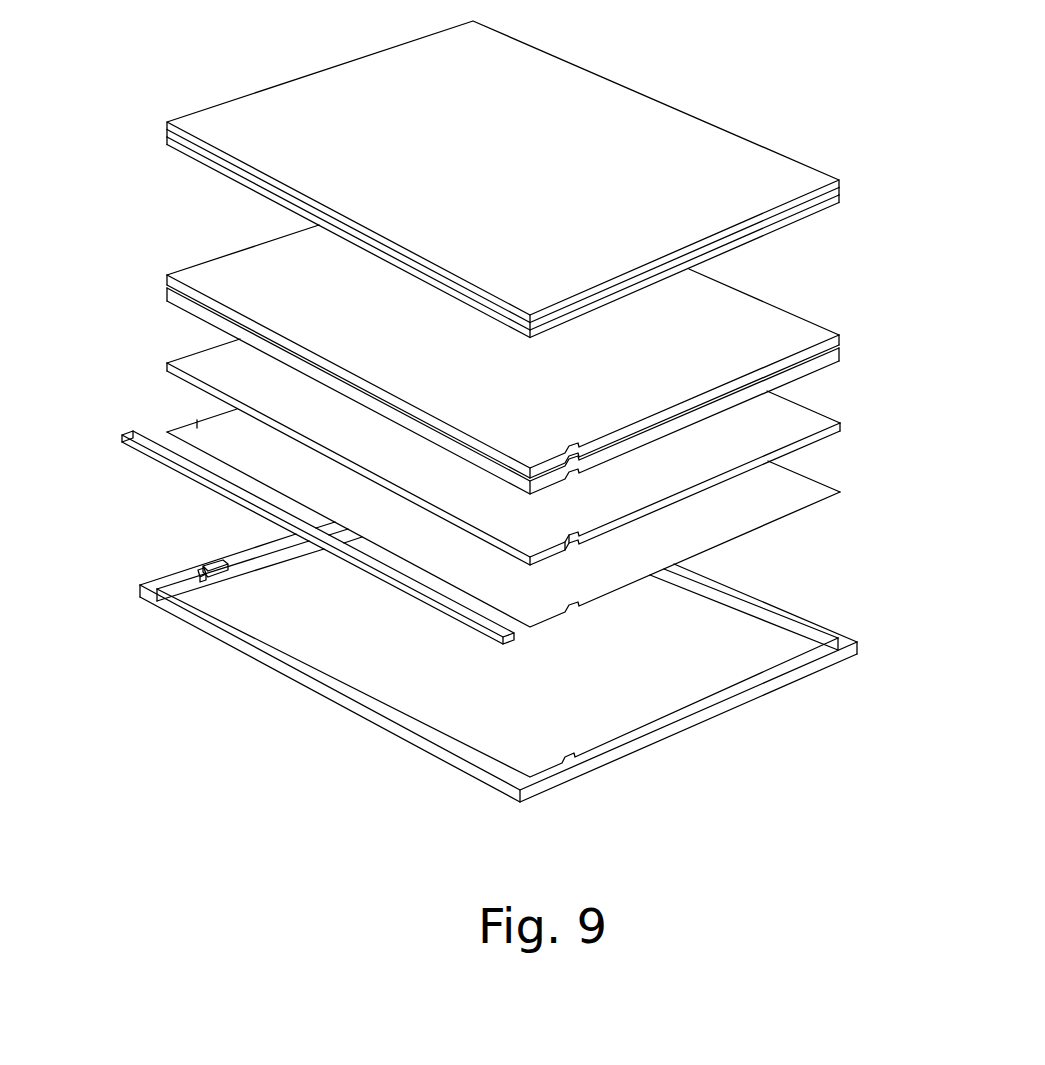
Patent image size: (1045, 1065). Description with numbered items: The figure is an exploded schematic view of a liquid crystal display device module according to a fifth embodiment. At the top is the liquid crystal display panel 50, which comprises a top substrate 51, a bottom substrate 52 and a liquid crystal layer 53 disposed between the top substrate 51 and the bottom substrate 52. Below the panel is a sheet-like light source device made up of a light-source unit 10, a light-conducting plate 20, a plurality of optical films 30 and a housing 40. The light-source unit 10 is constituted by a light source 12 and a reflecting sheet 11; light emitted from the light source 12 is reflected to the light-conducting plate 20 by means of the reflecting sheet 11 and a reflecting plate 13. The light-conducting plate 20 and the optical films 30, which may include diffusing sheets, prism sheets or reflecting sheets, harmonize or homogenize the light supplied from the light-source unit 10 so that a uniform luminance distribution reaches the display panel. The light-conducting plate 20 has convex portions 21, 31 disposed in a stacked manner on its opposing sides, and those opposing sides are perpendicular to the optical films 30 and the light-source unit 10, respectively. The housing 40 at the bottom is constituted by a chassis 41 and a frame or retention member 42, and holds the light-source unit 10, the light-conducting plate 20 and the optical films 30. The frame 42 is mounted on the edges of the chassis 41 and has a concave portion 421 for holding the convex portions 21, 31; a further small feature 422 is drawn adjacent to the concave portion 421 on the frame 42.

The light-source unit 10 is at (272, 606).
The reflecting sheet 11 is at (407, 592).
The light source 12 is at (503, 640).
The reflecting plate 13 is at (197, 419).
The light-conducting plate 20 is at (501, 441).
The convex portion 21 is at (203, 348).
The optical films 30 is at (494, 357).
The convex portion 31 is at (203, 260).
The housing 40 is at (520, 649).
The chassis 41 is at (727, 613).
The frame 42 is at (805, 620).
The concave portion 421 is at (207, 562).
The protrusion 422 is at (199, 571).
The liquid crystal display panel 50 is at (472, 179).
The top substrate 51 is at (202, 113).
The bottom substrate 52 is at (165, 145).
The liquid crystal layer 53 is at (165, 132).